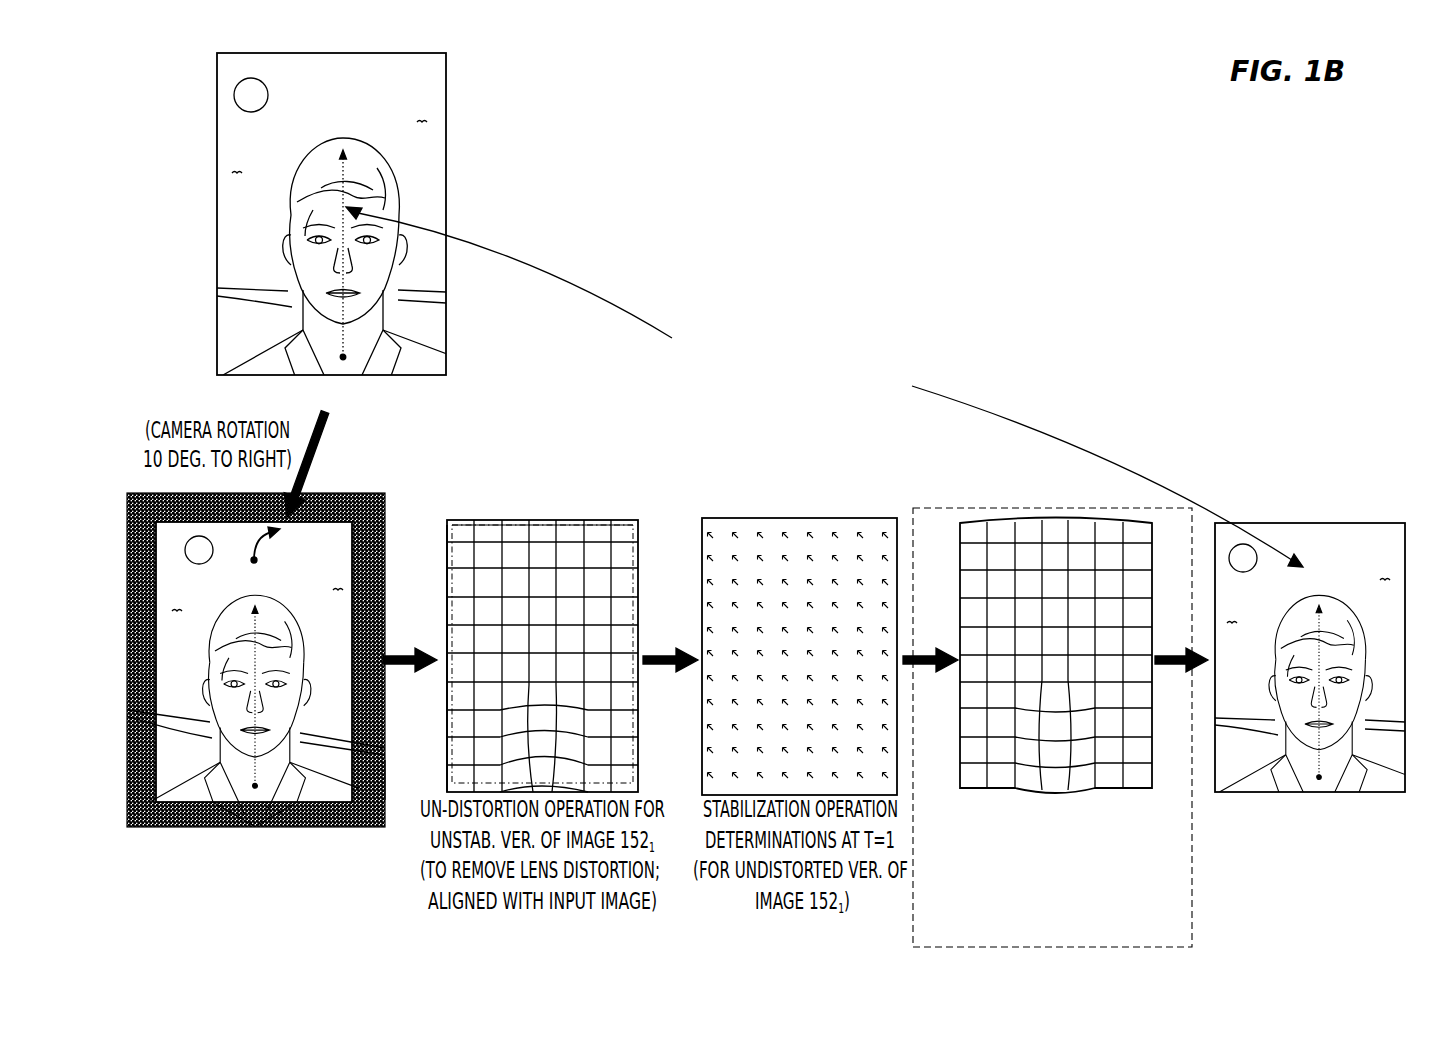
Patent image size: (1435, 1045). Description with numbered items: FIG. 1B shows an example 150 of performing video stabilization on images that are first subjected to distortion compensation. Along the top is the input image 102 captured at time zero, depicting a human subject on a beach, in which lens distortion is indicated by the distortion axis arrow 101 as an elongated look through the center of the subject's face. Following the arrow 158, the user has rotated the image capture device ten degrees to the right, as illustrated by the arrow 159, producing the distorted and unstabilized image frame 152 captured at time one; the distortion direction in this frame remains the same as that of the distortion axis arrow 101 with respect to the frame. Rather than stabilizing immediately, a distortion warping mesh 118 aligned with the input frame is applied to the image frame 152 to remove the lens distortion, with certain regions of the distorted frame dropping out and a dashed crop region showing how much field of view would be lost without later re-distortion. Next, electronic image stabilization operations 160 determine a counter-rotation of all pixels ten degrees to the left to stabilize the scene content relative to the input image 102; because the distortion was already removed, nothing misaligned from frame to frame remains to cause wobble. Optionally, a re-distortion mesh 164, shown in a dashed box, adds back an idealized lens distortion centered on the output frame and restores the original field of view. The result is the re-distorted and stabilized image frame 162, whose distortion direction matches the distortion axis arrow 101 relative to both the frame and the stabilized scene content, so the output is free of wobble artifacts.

The distortion axis arrow 101 is at (343, 183).
The input image 102 is at (266, 53).
The distortion warping mesh 118 is at (447, 621).
The example 150 is at (1012, 270).
The distorted and unstabilized image frame 152 is at (199, 519).
The arrow 158 is at (312, 458).
The arrow 159 is at (273, 554).
The electronic image stabilization operations 160 is at (748, 517).
The re-distorted and stabilized image frame 162 is at (1270, 522).
The mesh 164 is at (960, 591).